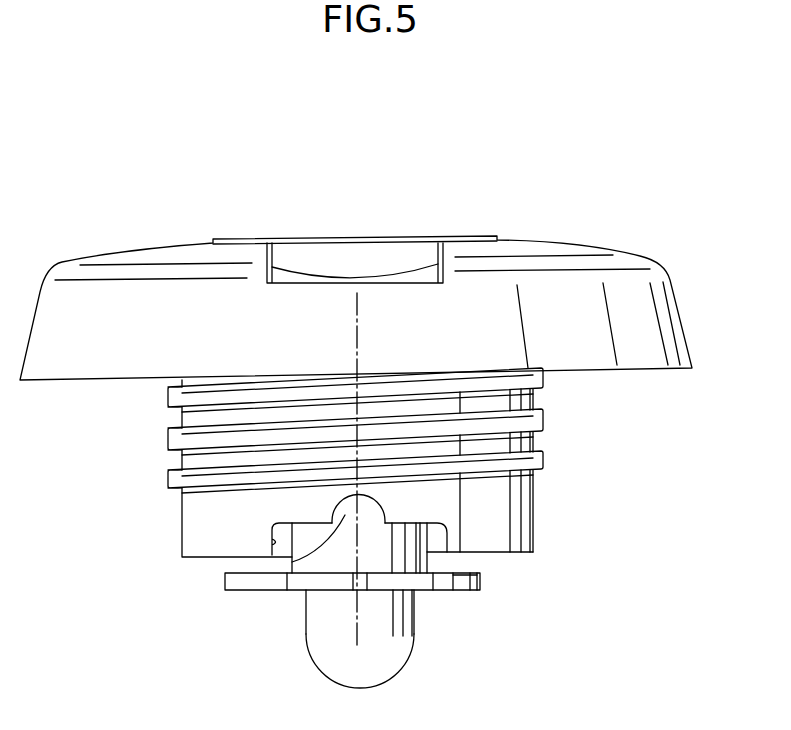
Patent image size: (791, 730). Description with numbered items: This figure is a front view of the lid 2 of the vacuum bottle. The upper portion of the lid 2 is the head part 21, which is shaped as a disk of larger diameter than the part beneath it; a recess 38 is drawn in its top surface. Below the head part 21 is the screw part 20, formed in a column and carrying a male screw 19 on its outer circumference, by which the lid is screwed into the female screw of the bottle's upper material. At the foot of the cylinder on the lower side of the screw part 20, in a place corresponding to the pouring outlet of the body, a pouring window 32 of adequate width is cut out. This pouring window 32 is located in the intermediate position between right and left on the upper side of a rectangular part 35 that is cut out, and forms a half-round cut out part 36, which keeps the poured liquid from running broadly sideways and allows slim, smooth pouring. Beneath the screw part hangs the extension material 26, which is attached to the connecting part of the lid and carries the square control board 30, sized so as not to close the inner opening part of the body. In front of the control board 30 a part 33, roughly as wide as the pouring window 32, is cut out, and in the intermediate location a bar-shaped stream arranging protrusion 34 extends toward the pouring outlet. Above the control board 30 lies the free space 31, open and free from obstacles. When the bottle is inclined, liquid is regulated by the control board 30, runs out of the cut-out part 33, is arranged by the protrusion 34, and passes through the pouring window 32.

The lid 2 is at (653, 155).
The head part 21 is at (677, 317).
The recess in cap top 38 is at (370, 238).
The male screw 19 is at (545, 455).
The screw part 20 is at (533, 506).
The free space 31 is at (515, 570).
The pouring window 32 is at (272, 532).
The rectangular part 35 is at (272, 550).
The cut out part 36 is at (292, 565).
The part 33 is at (303, 587).
The control board 30 is at (467, 590).
The stream arranging protrusion 34 is at (360, 590).
The extension material 26 is at (417, 653).